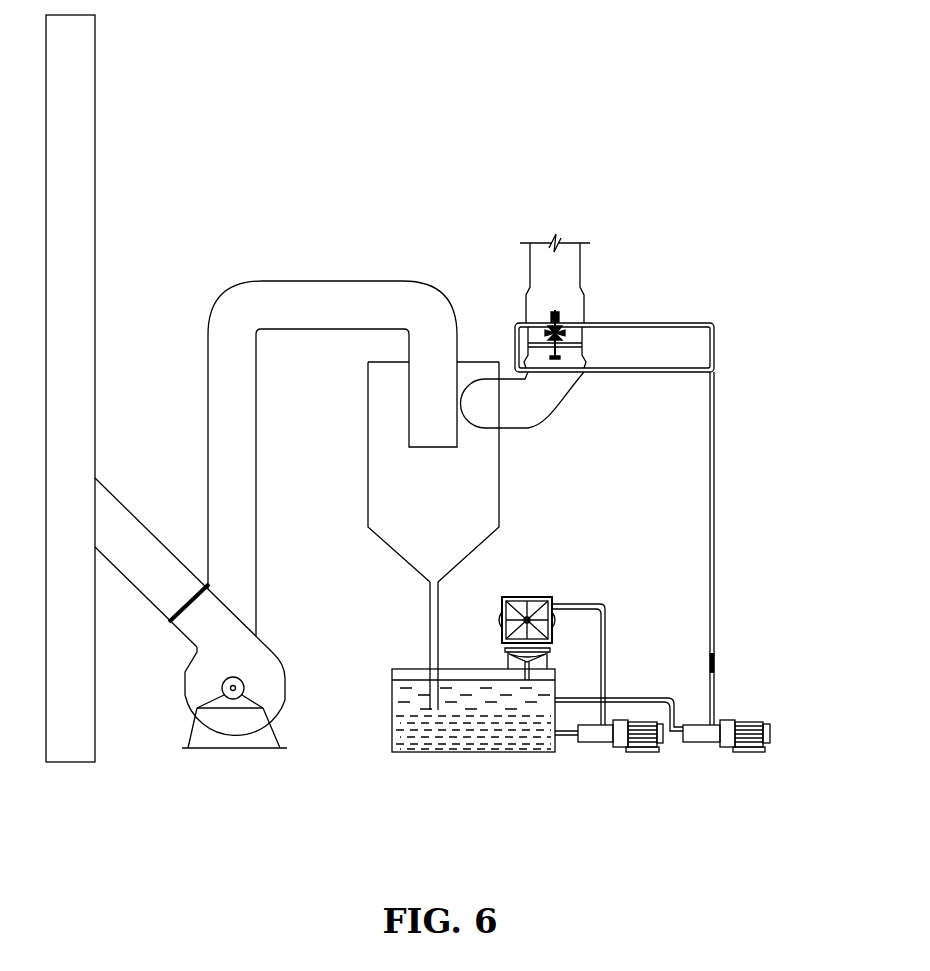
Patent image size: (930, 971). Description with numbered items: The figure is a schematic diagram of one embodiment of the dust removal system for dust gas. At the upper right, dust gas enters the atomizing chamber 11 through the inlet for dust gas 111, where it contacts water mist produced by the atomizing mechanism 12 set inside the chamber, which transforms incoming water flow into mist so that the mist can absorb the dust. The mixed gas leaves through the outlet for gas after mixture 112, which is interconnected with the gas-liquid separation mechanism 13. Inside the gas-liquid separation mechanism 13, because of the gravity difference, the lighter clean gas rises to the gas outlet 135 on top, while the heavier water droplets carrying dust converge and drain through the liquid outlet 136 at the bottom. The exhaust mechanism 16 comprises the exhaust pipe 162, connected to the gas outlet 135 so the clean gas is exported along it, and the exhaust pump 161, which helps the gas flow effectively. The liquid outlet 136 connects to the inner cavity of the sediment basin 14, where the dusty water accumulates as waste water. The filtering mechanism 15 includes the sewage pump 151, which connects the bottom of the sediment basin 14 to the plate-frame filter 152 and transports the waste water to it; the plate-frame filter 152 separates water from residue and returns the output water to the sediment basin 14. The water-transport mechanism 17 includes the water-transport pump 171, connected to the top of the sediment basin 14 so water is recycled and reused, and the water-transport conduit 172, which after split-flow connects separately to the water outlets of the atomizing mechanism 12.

The atomizing chamber 11 is at (583, 267).
The inlet for dust gas 111 is at (538, 240).
The atomizing mechanism 12 is at (563, 342).
The outlet for gas after mixture 112 is at (547, 395).
The gas-liquid separation mechanism 13 is at (368, 465).
The gas outlet 135 is at (432, 398).
The liquid outlet 136 is at (432, 578).
The sediment basin 14 is at (460, 757).
The filtering mechanism 15 is at (582, 681).
The sewage pump 151 is at (637, 727).
The plate-frame filter 152 is at (522, 597).
The exhaust mechanism 16 is at (200, 758).
The exhaust pump 161 is at (225, 680).
The exhaust pipe 162 is at (223, 473).
The water-transport mechanism 17 is at (753, 793).
The water-transport pump 171 is at (760, 730).
The water-transport conduit 172 is at (718, 632).